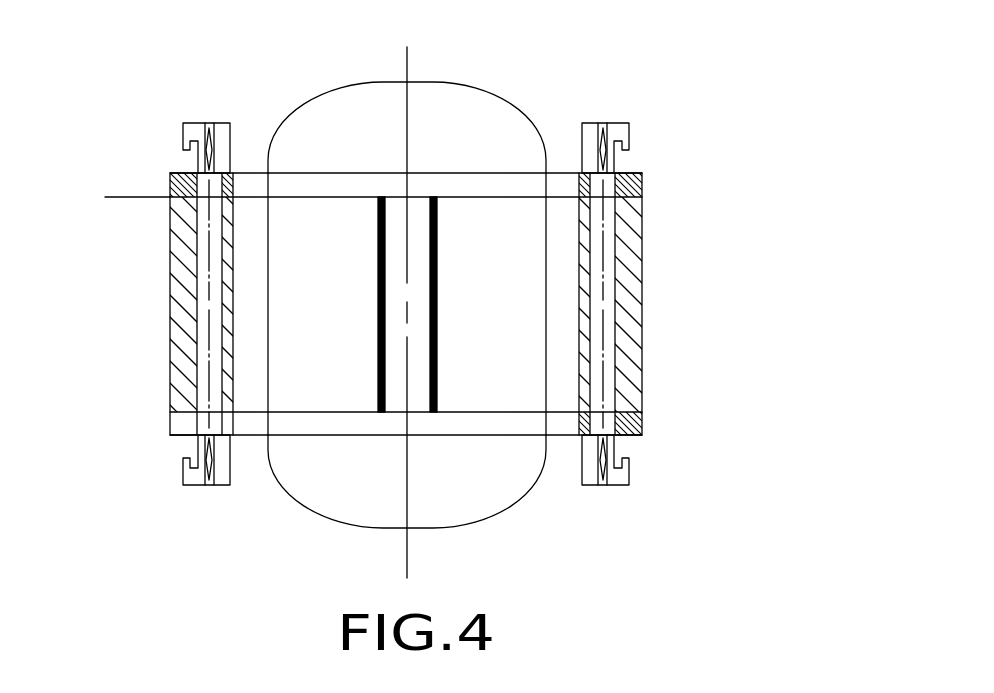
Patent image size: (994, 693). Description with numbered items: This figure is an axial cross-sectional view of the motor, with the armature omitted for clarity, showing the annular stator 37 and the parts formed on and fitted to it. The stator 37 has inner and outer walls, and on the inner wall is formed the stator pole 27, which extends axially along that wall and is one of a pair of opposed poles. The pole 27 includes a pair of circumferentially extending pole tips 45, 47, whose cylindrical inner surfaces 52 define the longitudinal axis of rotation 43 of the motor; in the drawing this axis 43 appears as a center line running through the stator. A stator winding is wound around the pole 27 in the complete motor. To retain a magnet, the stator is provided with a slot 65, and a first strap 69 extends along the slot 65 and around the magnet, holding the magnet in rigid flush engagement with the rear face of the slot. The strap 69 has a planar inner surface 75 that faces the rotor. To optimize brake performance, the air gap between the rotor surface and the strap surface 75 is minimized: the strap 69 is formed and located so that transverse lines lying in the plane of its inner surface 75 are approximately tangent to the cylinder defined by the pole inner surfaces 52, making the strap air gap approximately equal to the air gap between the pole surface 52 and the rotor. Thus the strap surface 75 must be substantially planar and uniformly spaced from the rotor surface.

The stator pole 27 is at (311, 226).
The annular stator 37 is at (663, 352).
The longitudinal axis of rotation 43 is at (405, 120).
The pole tip 45 is at (267, 293).
The pole tip 47 is at (548, 253).
The cylindrical inner surface 52 is at (366, 293).
The slot 65 is at (384, 243).
The first strap 69 is at (401, 341).
The planar inner surface 75 is at (422, 363).